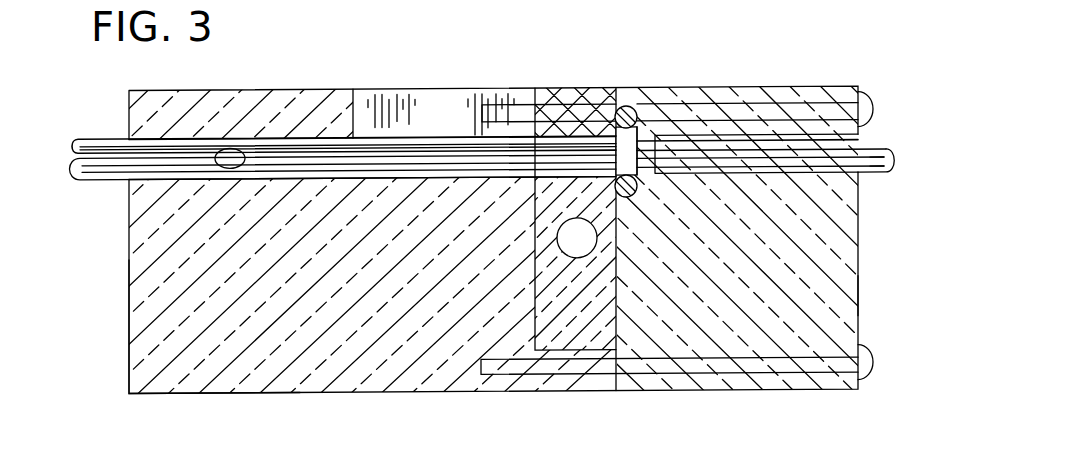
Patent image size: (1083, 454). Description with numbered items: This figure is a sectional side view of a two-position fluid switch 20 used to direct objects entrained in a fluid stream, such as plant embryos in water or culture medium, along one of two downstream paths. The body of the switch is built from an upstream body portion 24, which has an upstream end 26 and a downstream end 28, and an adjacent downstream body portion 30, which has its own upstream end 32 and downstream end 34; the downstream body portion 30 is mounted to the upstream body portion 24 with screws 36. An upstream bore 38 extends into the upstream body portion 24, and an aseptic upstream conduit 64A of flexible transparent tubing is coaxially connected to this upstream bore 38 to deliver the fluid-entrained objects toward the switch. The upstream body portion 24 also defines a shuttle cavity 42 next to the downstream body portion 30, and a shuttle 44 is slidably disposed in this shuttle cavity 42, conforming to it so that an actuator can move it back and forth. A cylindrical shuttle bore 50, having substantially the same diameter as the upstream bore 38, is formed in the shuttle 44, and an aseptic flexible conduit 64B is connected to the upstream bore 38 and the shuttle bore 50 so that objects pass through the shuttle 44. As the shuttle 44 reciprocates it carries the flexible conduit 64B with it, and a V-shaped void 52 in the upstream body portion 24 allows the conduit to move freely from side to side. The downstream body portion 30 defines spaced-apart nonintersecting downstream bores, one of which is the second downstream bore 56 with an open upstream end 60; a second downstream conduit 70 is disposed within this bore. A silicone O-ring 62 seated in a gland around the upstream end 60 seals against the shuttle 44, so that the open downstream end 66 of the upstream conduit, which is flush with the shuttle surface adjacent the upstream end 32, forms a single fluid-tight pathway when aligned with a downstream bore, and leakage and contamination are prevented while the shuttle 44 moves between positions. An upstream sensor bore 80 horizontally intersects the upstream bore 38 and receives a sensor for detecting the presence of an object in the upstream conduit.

The fluid switch 20 is at (106, 89).
The upstream body portion 24 is at (128, 110).
The upstream end 26 is at (128, 287).
The downstream end 28 is at (620, 92).
The downstream body portion 30 is at (860, 262).
The upstream end 32 is at (592, 88).
The downstream end 34 is at (858, 296).
The screws 36 is at (788, 100).
The upstream bore 38 is at (300, 166).
The shuttle cavity 42 is at (535, 305).
The shuttle 44 is at (618, 298).
The shuttle bore 50 is at (525, 153).
The V-shaped void 52 is at (408, 101).
The second downstream bore 56 is at (772, 160).
The upstream end of second downstream bore 60 is at (641, 172).
The O-ring 62 is at (646, 103).
The upstream conduit 64A is at (82, 186).
The flexible conduit 64B is at (422, 137).
The downstream end of upstream conduit 66 is at (584, 146).
The second downstream conduit 70 is at (882, 180).
The upstream sensor bore 80 is at (237, 148).